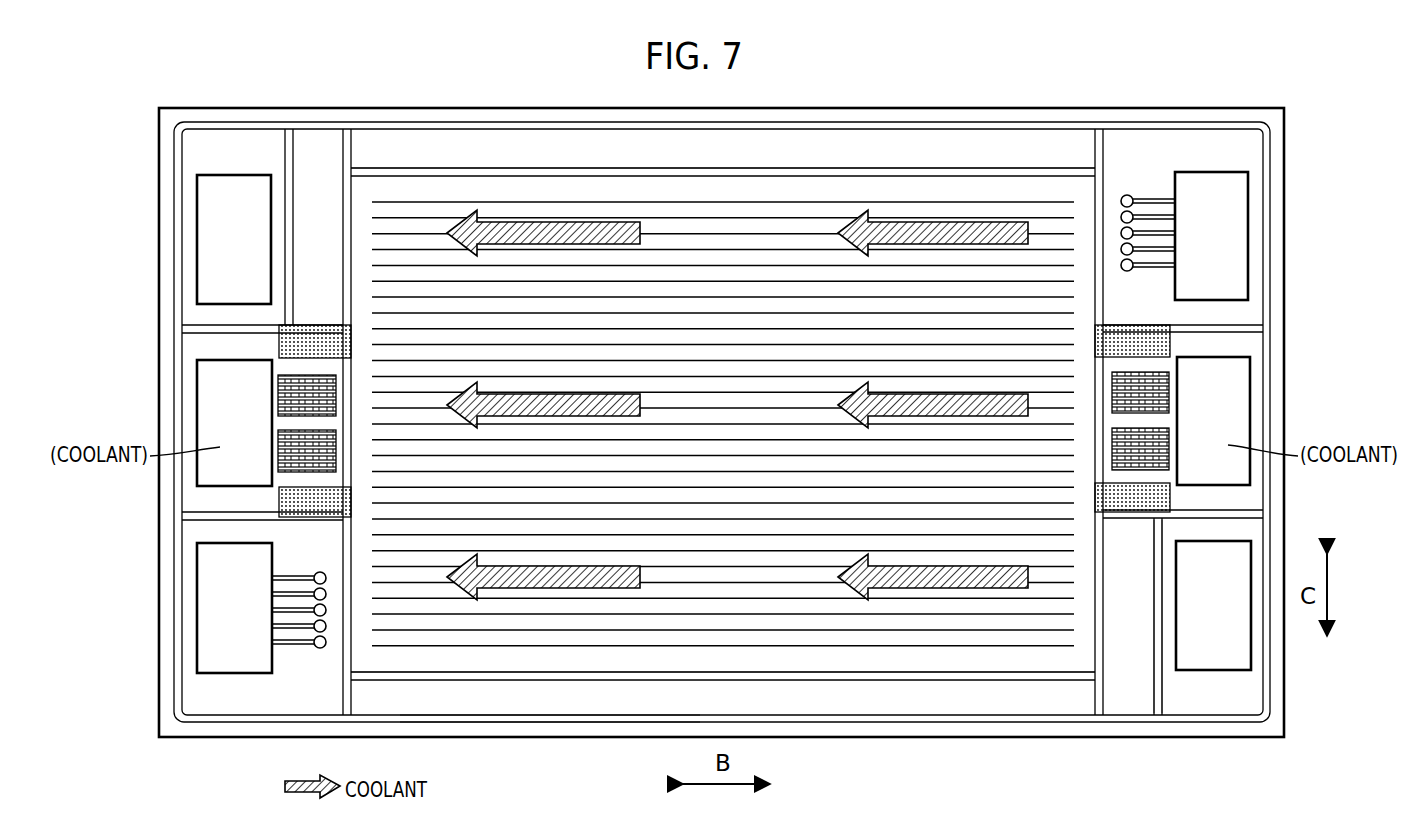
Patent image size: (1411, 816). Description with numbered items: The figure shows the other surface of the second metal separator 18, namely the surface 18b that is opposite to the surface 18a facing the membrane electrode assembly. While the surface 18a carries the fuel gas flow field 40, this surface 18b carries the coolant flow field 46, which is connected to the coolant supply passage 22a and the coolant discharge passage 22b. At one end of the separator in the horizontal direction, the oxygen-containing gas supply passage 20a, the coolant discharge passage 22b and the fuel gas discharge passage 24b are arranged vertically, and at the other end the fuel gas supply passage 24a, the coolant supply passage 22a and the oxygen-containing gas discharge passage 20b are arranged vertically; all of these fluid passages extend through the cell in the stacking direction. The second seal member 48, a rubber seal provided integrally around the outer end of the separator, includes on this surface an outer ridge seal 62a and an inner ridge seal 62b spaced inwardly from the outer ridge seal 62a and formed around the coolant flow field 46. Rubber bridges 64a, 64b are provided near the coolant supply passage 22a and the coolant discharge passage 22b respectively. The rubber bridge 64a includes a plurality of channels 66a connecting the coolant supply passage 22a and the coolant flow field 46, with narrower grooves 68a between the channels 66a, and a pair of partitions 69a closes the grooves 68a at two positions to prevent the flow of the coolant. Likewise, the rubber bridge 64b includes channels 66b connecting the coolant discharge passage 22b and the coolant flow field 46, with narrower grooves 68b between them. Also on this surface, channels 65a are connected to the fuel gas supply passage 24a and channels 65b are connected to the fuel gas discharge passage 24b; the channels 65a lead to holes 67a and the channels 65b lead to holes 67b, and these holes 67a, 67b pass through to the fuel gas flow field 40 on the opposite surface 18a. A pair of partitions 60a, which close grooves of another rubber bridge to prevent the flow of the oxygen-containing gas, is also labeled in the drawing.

The second metal separator 18 is at (416, 78).
The surface 18a is at (531, 706).
The surface 18b is at (590, 702).
The oxygen-containing gas supply passage 20a is at (234, 239).
The oxygen-containing gas discharge passage 20b is at (1213, 605).
The coolant supply passage 22a is at (1213, 421).
The coolant discharge passage 22b is at (234, 423).
The fuel gas supply passage 24a is at (1211, 236).
The fuel gas discharge passage 24b is at (234, 608).
The fuel gas flow field 40 is at (785, 605).
The coolant flow field 46 is at (864, 605).
The second seal member 48 is at (612, 143).
The partitions 60a is at (1127, 645).
The outer ridge seal 62a is at (988, 126).
The inner ridge seal 62b is at (933, 167).
The rubber bridge 64a is at (1135, 478).
The rubber bridge 64b is at (313, 480).
The channels 65a is at (1170, 202).
The channels 65b is at (282, 642).
The channels 66a is at (1158, 366).
The channels 66b is at (290, 375).
The holes 67a is at (1127, 196).
The holes 67b is at (321, 649).
The grooves 68a is at (1165, 460).
The grooves 68b is at (296, 461).
The partitions 69a is at (297, 462).